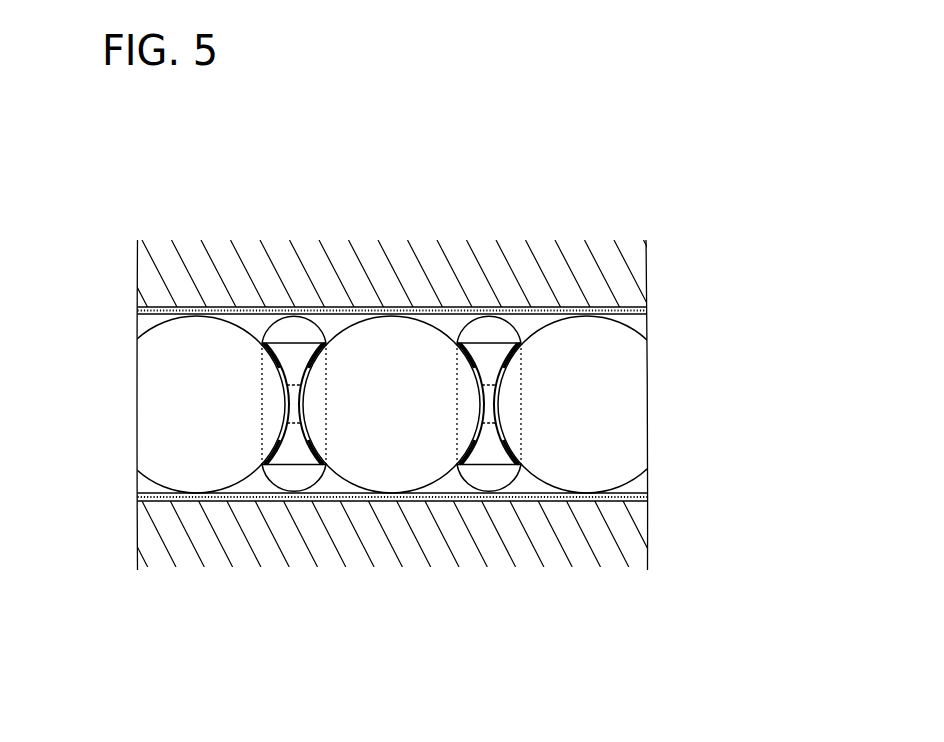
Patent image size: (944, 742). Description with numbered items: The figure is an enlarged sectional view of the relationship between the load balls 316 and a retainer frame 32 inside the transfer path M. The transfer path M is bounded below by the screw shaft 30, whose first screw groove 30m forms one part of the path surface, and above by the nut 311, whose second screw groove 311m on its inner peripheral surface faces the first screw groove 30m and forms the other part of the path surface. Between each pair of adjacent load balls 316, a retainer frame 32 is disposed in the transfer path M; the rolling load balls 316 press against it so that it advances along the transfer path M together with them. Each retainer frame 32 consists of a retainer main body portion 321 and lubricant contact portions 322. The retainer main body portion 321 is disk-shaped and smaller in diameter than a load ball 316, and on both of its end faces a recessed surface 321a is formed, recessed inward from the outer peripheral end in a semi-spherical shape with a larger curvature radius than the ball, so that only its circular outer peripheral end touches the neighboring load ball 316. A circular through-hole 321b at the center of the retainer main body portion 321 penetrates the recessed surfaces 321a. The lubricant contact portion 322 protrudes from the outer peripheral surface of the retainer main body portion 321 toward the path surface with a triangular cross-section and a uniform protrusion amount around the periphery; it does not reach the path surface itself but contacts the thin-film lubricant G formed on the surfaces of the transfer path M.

The screw shaft 30 is at (160, 538).
The first screw groove 30m is at (625, 499).
The nut 311 is at (164, 268).
The second screw groove 311m is at (631, 310).
The load ball 316 is at (400, 338).
The retainer frame 32 is at (483, 417).
The retainer main body portion 321 is at (292, 450).
The recessed surface 321a is at (273, 372).
The through-hole 321b is at (493, 403).
The lubricant contact portion 322 is at (293, 328).
The transfer path M is at (519, 320).
The lubricant G is at (604, 493).